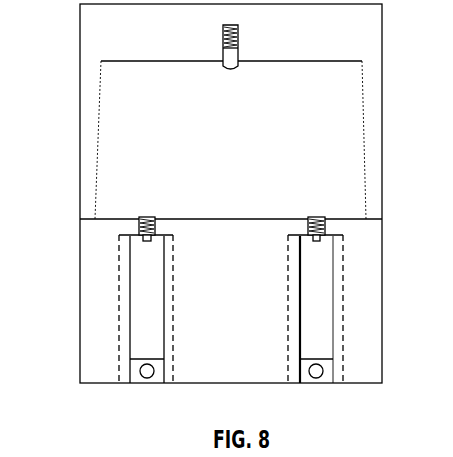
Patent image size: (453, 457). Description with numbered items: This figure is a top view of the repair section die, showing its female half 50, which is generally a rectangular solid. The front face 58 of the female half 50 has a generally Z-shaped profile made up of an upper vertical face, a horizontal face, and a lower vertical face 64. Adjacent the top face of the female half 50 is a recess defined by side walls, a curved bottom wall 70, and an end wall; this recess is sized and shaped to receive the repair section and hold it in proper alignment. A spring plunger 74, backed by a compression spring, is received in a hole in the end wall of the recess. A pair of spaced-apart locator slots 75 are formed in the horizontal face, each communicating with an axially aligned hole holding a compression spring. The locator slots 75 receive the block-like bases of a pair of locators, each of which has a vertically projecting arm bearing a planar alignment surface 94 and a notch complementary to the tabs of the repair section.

The female half 50 is at (147, 43).
The front face 58 is at (368, 366).
The lower vertical face 64 is at (409, 0).
The curved bottom wall 70 is at (175, 125).
The spring plunger 74 is at (234, 63).
The locator slots 75 is at (114, 307).
The planar alignment surface 94 is at (335, 235).